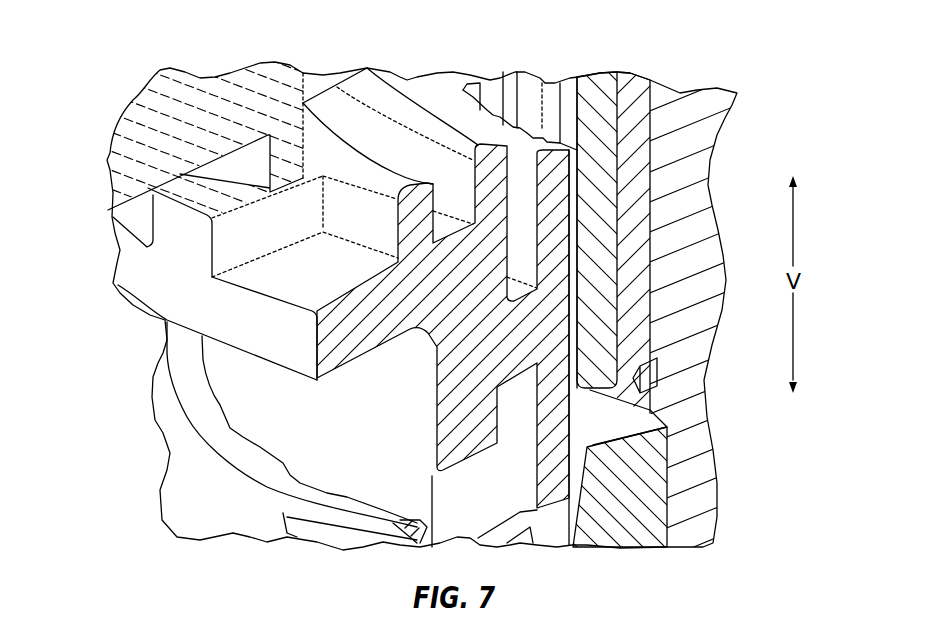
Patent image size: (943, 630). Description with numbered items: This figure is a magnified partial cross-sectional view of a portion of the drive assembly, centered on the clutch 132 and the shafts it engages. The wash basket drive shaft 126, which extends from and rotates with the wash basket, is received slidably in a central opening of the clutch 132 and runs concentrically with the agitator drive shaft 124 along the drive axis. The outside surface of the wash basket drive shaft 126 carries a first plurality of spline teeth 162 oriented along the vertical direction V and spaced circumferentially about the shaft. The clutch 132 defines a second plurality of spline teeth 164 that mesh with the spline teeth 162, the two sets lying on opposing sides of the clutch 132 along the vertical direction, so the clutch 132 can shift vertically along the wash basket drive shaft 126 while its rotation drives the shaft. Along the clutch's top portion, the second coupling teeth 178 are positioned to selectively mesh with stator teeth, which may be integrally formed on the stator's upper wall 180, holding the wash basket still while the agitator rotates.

The agitator drive shaft 124 is at (630, 83).
The wash basket drive shaft 126 is at (590, 83).
The clutch 132 is at (150, 285).
The first plurality of spline teeth 162 is at (519, 85).
The second plurality of spline teeth 164 is at (531, 128).
The second coupling tine or plurality of teeth 178 is at (167, 228).
The upper wall 180 is at (183, 97).